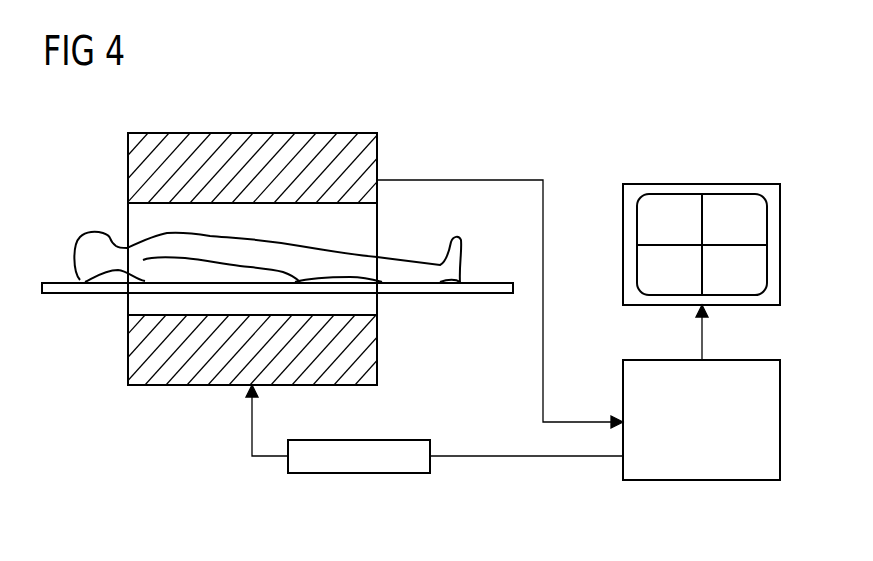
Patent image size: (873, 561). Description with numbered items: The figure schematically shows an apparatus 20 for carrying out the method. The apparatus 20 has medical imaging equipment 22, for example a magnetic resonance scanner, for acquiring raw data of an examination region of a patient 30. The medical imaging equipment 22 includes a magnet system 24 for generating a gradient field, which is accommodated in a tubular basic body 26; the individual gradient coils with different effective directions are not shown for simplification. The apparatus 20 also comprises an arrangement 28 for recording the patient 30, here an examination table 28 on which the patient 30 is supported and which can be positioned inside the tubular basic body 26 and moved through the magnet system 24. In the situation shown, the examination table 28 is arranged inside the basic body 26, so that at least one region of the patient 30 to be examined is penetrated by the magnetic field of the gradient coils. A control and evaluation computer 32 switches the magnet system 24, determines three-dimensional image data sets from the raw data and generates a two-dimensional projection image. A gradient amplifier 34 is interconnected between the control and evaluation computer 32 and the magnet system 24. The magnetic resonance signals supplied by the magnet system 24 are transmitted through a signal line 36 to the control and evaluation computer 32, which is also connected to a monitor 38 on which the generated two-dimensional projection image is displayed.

The apparatus 20 is at (588, 115).
The medical imaging equipment 22 is at (95, 313).
The magnet system 24 is at (355, 127).
The tubular basic body 26 is at (128, 160).
The examination table 28 is at (478, 294).
The patient 30 is at (407, 270).
The control and evaluation computer 32 is at (623, 360).
The gradient amplifier 34 is at (407, 440).
The signal line 36 is at (474, 178).
The monitor 38 is at (700, 183).